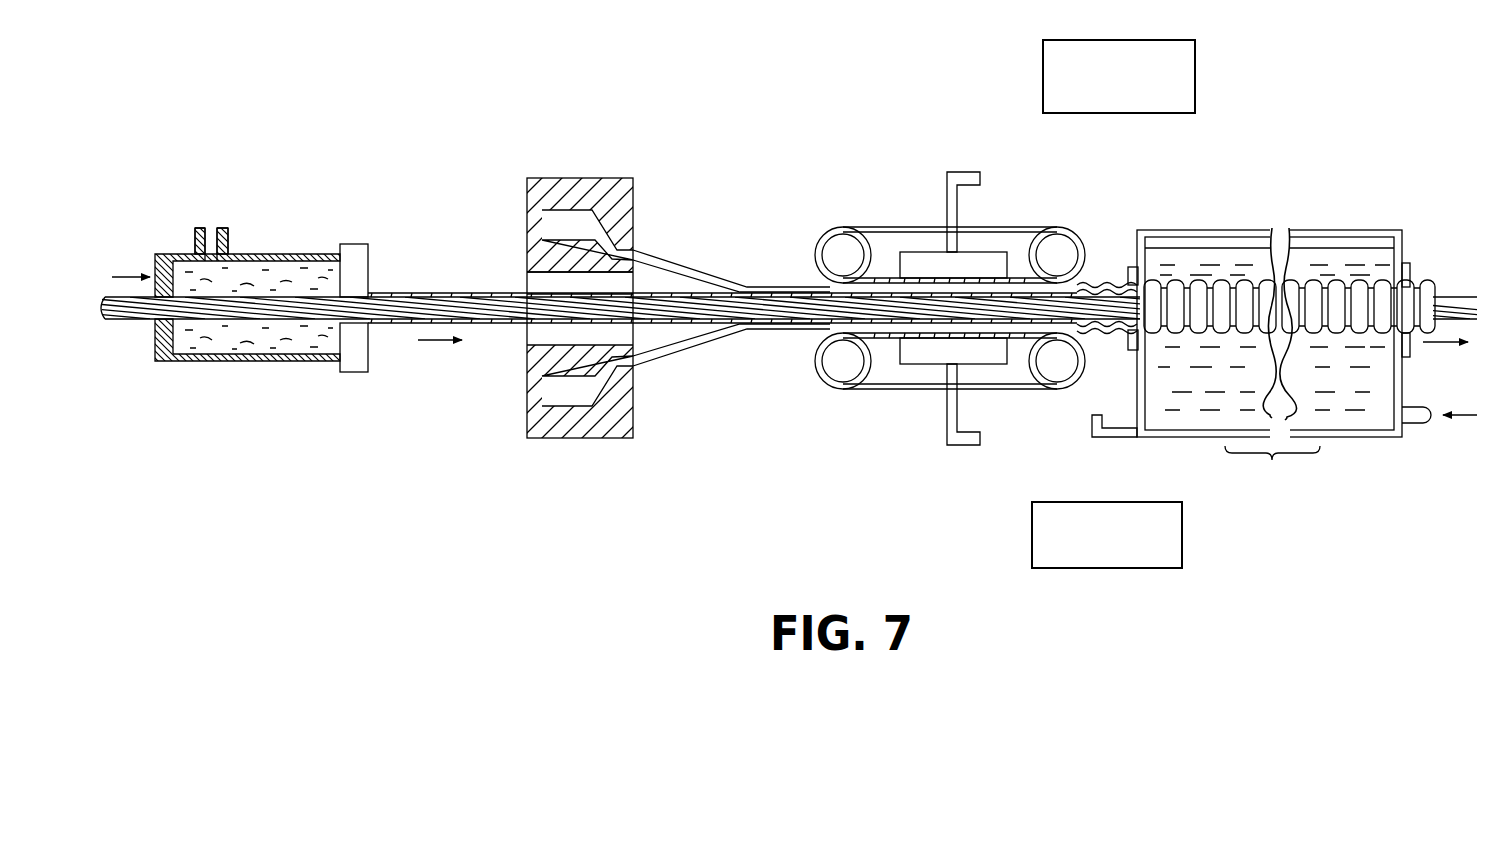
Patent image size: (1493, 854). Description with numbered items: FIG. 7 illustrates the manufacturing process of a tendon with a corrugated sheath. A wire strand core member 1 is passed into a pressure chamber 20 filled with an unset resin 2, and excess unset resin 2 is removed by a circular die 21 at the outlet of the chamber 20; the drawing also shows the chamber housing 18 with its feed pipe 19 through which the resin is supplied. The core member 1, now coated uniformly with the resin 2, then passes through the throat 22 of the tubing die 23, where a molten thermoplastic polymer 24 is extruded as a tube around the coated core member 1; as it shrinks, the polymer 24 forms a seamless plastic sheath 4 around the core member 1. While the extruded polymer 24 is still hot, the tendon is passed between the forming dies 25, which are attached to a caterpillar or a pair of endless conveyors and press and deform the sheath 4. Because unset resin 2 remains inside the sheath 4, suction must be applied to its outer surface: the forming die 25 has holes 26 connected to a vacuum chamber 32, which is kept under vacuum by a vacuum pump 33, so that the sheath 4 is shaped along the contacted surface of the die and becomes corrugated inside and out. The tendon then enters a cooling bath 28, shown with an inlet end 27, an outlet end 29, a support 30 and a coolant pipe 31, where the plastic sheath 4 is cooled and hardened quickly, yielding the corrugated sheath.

The wire strand core member 1 is at (137, 320).
The unset resin 2 is at (428, 292).
The sheath 4 is at (1093, 337).
The filling housing 18 is at (157, 262).
The inlet pipe 19 is at (210, 227).
The pressure chamber 20 is at (259, 275).
The circular die 21 is at (357, 250).
The throat 22 is at (532, 283).
The tubing die 23 is at (627, 193).
The molten thermoplastic polymer 24 is at (636, 252).
The forming dies 25 is at (870, 227).
The holes 26 is at (947, 199).
The inlet gland 27 is at (1130, 266).
The cooling bath 28 is at (1207, 231).
The outlet gland 29 is at (1405, 266).
The tank support 30 is at (1090, 427).
The coolant inlet pipe 31 is at (1420, 426).
The vacuum chamber 32 is at (930, 362).
The vacuum pump 33 is at (990, 168).